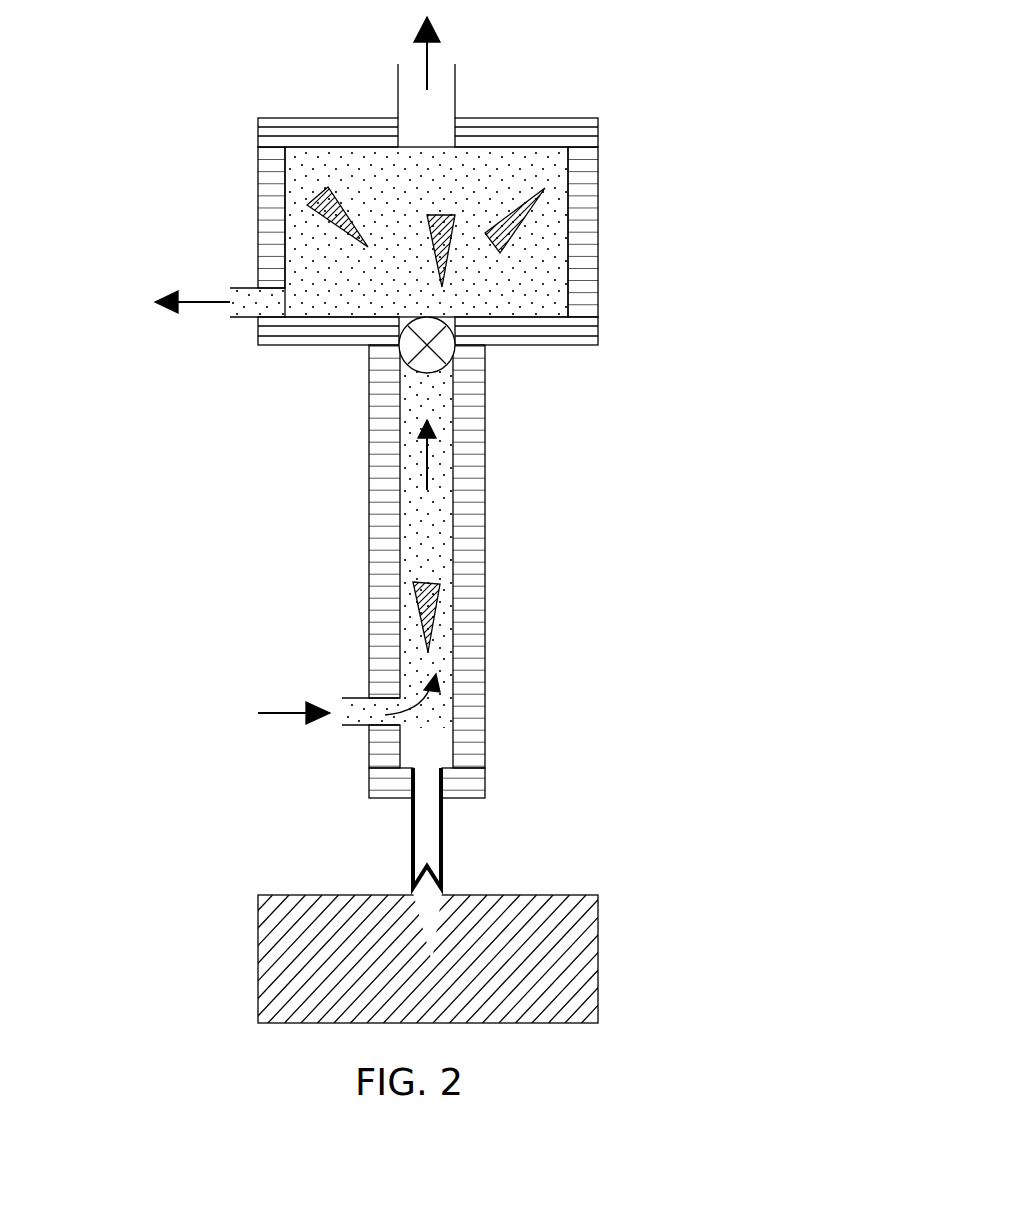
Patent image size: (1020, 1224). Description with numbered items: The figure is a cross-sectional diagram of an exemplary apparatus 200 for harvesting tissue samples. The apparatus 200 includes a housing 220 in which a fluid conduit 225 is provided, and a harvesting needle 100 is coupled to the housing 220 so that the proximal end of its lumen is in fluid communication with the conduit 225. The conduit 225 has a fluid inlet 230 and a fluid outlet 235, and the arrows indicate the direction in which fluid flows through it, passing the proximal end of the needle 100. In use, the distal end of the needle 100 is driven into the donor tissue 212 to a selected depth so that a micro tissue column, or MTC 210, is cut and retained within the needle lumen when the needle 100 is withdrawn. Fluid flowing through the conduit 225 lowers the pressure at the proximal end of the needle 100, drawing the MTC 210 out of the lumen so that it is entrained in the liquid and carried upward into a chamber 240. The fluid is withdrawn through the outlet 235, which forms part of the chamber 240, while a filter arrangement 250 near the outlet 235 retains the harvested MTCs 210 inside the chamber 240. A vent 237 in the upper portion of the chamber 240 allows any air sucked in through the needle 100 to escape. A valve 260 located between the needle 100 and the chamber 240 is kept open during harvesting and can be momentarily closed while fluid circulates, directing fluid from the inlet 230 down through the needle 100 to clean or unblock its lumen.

The harvesting needle 100 is at (455, 847).
The apparatus 200 is at (635, 148).
The MTC 210 is at (448, 258).
The donor tissue 212 is at (282, 902).
The housing 220 is at (372, 517).
The fluid conduit 225 is at (430, 528).
The fluid inlet 230 is at (355, 708).
The fluid outlet 235 is at (242, 298).
The vent 237 is at (442, 107).
The chamber 240 is at (265, 164).
The filter arrangement 250 is at (285, 287).
The valve 260 is at (442, 340).